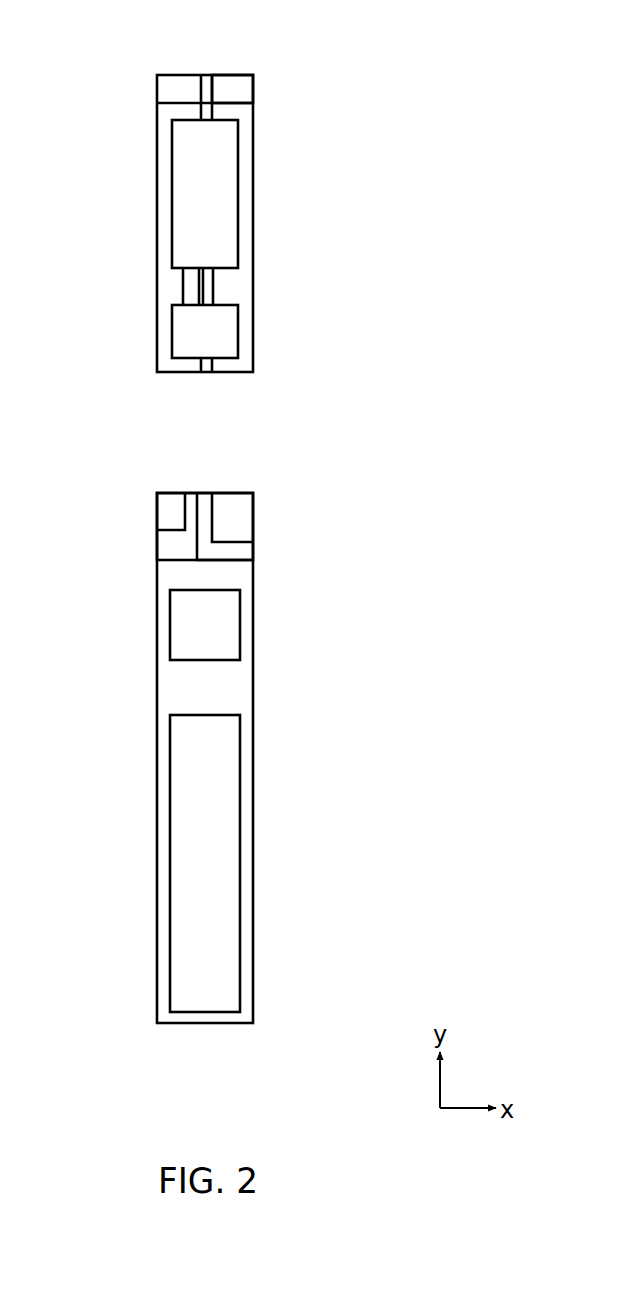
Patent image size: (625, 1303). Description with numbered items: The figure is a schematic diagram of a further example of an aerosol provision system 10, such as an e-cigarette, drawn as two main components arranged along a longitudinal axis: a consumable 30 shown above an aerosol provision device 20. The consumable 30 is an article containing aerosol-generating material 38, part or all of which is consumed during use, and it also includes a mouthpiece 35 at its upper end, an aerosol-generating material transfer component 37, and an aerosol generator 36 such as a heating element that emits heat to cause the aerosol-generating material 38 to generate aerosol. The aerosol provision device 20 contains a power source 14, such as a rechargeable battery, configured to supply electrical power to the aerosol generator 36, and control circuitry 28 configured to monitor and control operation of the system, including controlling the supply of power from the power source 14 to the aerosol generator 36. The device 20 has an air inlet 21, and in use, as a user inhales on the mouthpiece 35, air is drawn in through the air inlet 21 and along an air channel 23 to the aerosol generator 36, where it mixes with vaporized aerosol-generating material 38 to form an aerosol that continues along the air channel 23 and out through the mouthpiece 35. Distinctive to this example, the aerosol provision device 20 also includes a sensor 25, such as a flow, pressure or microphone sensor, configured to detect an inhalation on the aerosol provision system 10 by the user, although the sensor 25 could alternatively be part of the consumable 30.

The aerosol provision system 10 is at (413, 72).
The consumable 30 is at (142, 193).
The mouthpiece 35 is at (233, 90).
The aerosol-generating material 38 is at (223, 190).
The air channel 23 is at (205, 292).
The aerosol-generating material transfer component 37 is at (180, 288).
The aerosol generator 36 is at (223, 325).
The aerosol provision device 20 is at (140, 697).
The sensor 25 is at (167, 513).
The air inlet 21 is at (253, 550).
The control circuitry 28 is at (225, 620).
The power source 14 is at (213, 825).